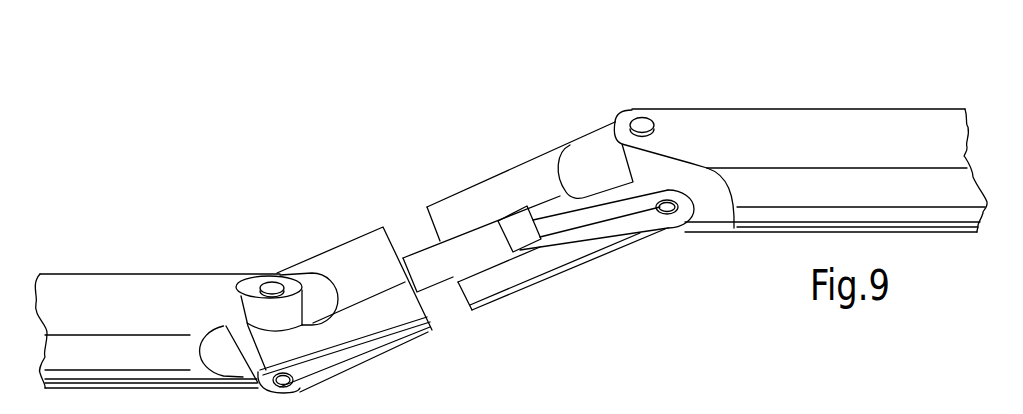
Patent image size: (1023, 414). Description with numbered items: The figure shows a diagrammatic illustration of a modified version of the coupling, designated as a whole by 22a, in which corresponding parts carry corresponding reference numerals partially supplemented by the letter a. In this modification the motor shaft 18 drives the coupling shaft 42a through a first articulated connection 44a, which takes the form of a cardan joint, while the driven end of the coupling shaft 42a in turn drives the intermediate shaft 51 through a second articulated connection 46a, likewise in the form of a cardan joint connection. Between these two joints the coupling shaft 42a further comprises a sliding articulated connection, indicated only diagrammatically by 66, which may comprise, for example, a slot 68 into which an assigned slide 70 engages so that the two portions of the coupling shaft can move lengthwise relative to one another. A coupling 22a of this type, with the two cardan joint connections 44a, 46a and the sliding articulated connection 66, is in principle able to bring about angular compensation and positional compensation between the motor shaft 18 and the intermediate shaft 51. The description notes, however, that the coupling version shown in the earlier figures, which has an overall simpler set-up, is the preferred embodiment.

The motor shaft 18 is at (797, 125).
The coupling 22a is at (220, 122).
The coupling shaft 42a is at (457, 312).
The first articulated connection 44a is at (638, 170).
The second articulated connection 46a is at (262, 322).
The intermediate shaft 51 is at (130, 297).
The sliding articulated connection 66 is at (522, 252).
The slot 68 is at (511, 219).
The slide 70 is at (440, 258).